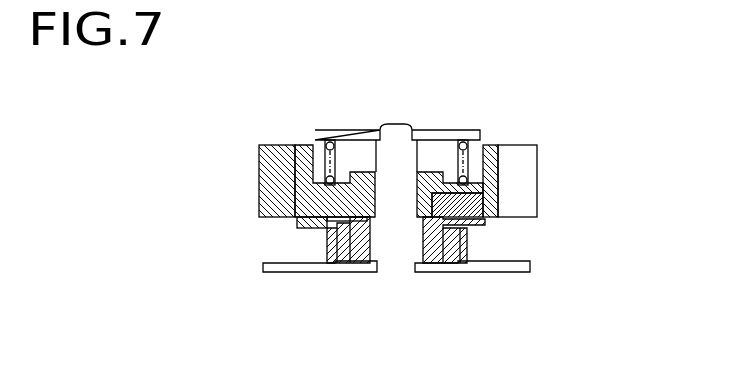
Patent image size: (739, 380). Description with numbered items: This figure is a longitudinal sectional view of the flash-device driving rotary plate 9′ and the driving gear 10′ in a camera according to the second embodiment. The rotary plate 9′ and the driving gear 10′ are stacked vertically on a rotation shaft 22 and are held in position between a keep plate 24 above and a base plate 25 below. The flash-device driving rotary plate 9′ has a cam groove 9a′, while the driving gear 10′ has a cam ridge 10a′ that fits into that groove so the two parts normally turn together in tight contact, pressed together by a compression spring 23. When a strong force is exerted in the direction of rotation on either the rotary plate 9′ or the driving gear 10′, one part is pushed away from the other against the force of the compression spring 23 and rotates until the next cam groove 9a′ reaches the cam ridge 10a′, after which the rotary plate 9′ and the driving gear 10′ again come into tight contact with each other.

The flash-device driving rotary plate 9′ is at (259, 167).
The cam groove 9a′ is at (477, 167).
The driving gear 10′ is at (490, 218).
The cam ridge 10a′ is at (483, 210).
The rotation shaft 22 is at (398, 134).
The compression spring 23 is at (458, 166).
The keep plate 24 is at (328, 131).
The base plate 25 is at (297, 268).